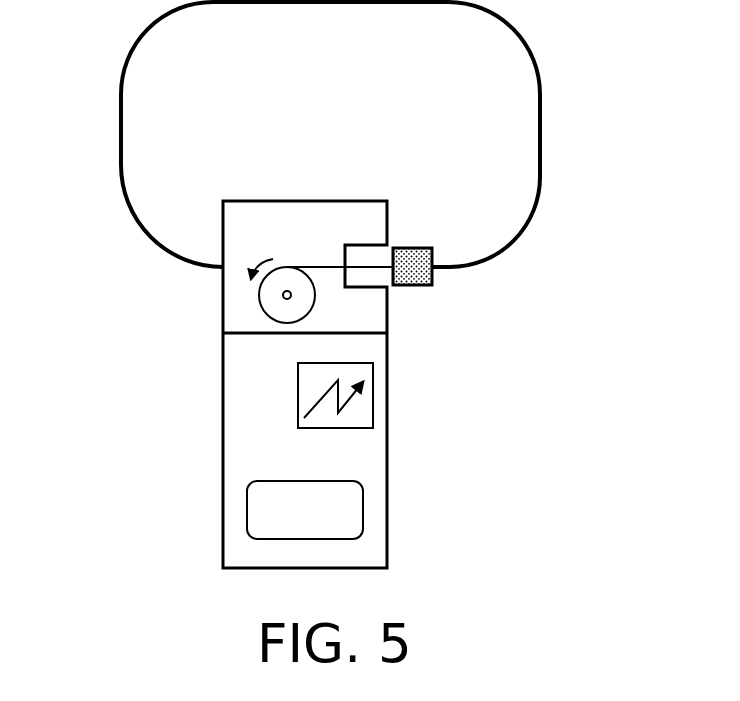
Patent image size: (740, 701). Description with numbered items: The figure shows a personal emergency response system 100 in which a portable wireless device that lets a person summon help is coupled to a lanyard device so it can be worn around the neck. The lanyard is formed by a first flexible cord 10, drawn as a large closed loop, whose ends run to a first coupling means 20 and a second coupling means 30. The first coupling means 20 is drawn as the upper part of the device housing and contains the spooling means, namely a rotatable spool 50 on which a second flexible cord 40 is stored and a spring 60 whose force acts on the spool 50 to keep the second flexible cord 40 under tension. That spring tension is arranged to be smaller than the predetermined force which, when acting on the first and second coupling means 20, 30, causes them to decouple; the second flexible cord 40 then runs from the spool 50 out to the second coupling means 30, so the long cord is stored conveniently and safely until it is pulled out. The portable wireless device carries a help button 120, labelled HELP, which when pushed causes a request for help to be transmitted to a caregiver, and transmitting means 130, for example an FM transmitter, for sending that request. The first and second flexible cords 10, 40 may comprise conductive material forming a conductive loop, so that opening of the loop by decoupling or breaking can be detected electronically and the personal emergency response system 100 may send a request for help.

The first flexible cord 10 is at (541, 133).
The first coupling means 20 is at (305, 200).
The second coupling means 30 is at (412, 247).
The second flexible cord 40 is at (312, 266).
The spool 50 is at (258, 293).
The spring 60 is at (300, 300).
The personal emergency response system 100 is at (120, 370).
The help button 120 is at (247, 510).
The transmitting means 130 is at (373, 397).